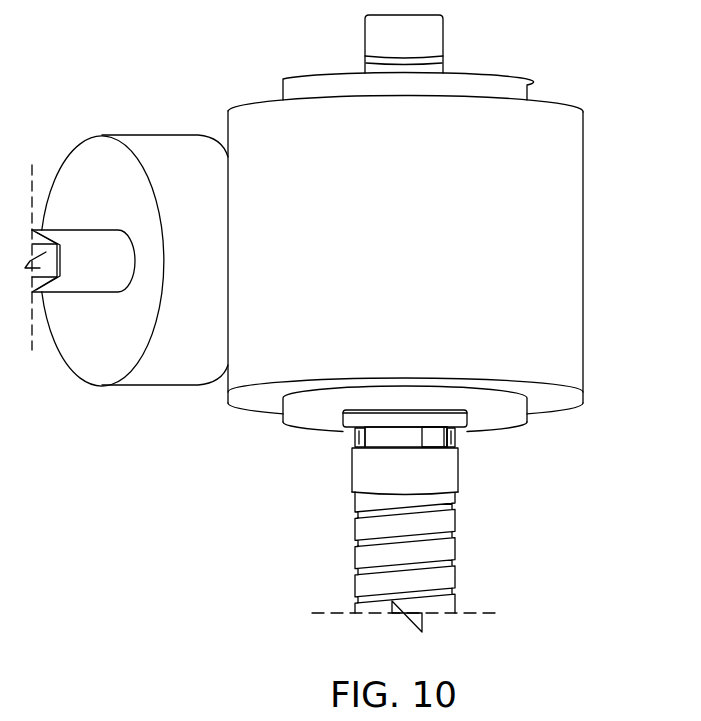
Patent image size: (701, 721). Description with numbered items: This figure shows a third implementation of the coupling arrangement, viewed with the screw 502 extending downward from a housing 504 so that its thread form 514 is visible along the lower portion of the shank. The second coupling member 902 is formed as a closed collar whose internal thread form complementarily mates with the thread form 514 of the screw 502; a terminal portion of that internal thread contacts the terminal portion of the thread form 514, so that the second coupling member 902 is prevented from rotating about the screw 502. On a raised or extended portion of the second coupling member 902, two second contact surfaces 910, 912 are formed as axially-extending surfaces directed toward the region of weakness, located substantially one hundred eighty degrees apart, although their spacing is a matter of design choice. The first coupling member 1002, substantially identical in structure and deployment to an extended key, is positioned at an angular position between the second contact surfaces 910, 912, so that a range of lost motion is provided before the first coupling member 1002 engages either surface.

The screw 502 is at (372, 37).
The housing 504 is at (578, 222).
The thread form 514 is at (456, 550).
The second coupling member 902 is at (458, 480).
The second contact surface 910 is at (457, 440).
The second contact surface 912 is at (357, 434).
The first coupling member 1002 is at (437, 435).